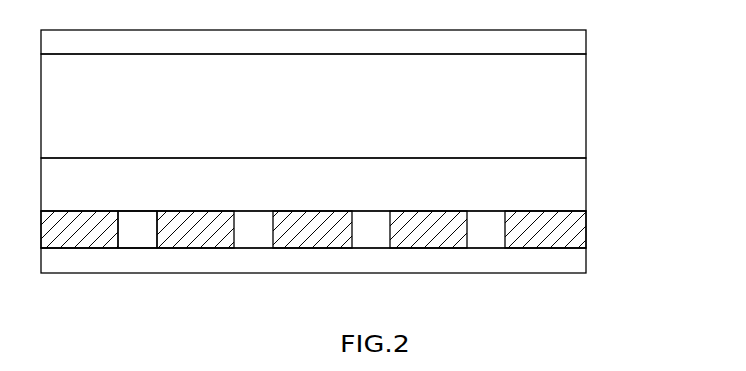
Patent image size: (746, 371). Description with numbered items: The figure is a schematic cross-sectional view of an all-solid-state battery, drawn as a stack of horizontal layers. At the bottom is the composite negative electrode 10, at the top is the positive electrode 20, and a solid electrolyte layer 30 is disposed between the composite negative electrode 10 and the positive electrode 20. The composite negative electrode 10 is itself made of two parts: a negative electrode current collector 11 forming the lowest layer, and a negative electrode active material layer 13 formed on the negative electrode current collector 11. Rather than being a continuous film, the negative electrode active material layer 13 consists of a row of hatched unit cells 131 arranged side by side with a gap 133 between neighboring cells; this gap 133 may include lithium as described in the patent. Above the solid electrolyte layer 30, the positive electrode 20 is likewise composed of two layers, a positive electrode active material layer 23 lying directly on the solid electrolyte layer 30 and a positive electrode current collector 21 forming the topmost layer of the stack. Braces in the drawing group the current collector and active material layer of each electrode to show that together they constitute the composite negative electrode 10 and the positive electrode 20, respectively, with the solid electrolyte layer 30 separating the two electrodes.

The composite negative electrode 10 is at (355, 274).
The negative electrode current collector 11 is at (662, 228).
The negative electrode active material layer 13 is at (332, 274).
The unit cell 131 is at (212, 235).
The gap 133 is at (140, 230).
The solid electrolyte layer 30 is at (586, 179).
The positive electrode 20 is at (373, 94).
The positive electrode current collector 21 is at (586, 40).
The positive electrode active material layer 23 is at (586, 96).